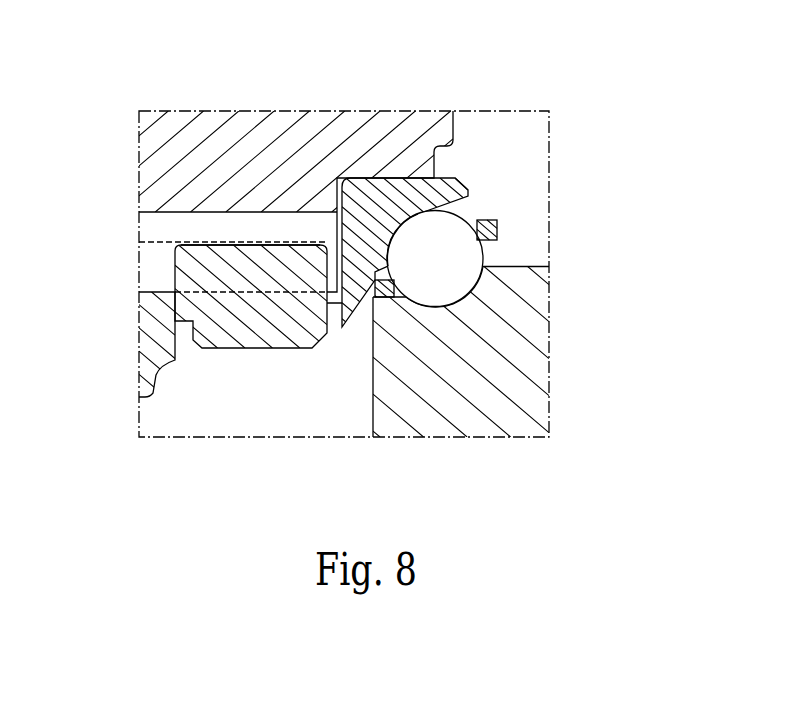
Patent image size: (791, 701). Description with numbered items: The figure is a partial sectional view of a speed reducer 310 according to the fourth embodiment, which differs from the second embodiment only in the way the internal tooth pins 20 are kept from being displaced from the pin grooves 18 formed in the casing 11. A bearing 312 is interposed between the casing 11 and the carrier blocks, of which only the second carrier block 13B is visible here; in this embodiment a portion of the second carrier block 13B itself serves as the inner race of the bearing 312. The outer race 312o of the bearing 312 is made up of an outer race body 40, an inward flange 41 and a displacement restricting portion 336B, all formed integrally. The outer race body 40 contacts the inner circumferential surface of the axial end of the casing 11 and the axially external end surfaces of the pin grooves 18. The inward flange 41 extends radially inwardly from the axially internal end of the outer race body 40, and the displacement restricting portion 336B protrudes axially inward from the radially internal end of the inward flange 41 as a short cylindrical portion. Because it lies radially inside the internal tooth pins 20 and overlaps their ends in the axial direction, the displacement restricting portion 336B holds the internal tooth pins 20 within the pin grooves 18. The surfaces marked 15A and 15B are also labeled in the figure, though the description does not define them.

The speed reducer 310 is at (528, 106).
The casing 11 is at (232, 108).
The internal tooth pins 20 is at (177, 210).
The pin grooves 18 is at (225, 228).
The second seal surface 15B is at (281, 236).
The first seal surface 15A is at (150, 285).
The outer race body 40 is at (401, 188).
The second carrier block 13B is at (528, 372).
The inward flange 41 is at (376, 296).
The displacement restricting portion 336B is at (385, 248).
The outer race 312o is at (443, 174).
The bearing 312 is at (514, 208).